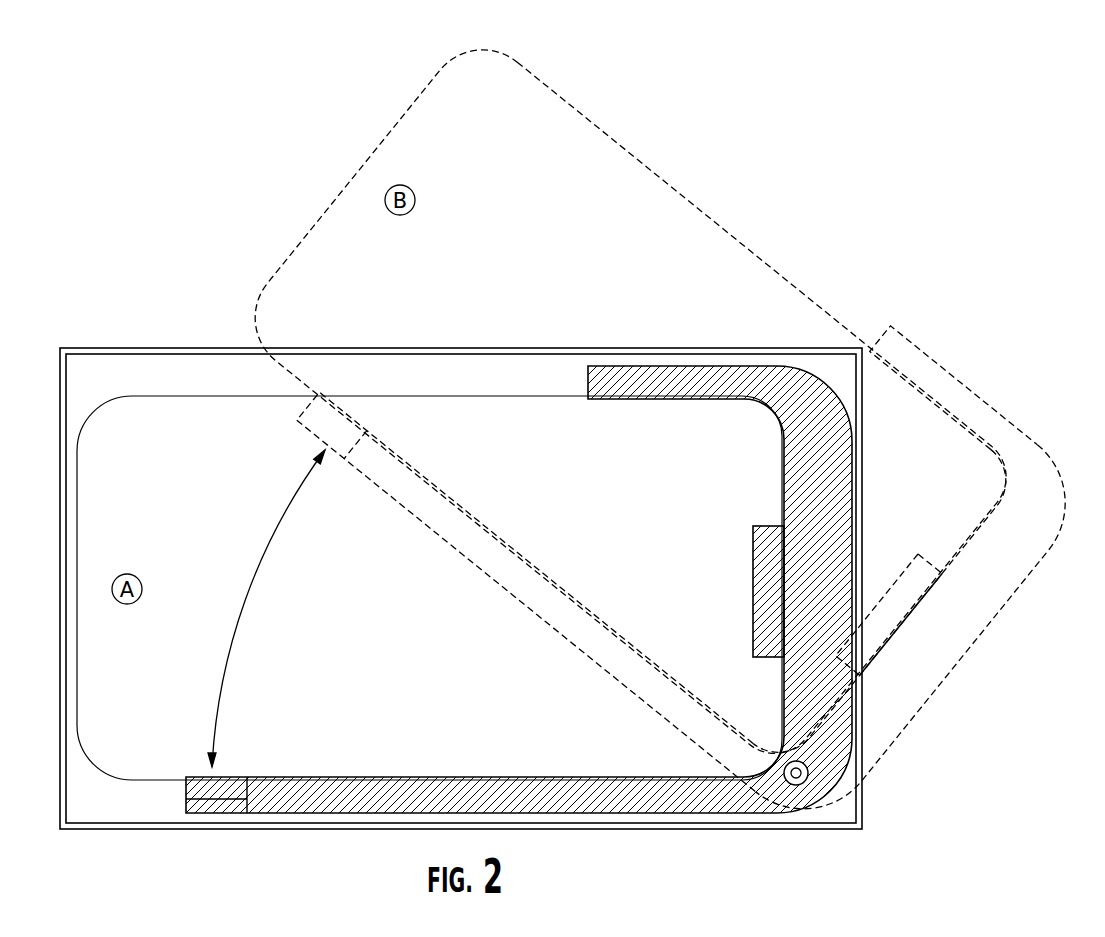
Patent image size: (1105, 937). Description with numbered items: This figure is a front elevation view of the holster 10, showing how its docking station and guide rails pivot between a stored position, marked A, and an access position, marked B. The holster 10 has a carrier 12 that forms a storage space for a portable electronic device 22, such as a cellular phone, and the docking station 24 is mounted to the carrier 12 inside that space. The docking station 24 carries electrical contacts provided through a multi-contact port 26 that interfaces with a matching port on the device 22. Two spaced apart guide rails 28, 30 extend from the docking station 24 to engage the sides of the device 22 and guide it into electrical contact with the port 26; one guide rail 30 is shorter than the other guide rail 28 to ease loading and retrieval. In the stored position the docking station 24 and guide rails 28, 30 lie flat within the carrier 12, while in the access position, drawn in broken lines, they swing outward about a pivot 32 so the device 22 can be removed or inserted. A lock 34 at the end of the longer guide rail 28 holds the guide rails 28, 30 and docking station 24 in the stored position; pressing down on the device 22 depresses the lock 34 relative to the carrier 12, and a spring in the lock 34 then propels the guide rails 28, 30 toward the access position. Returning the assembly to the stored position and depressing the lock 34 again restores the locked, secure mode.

The holster 10 is at (724, 133).
The carrier 12 is at (160, 368).
The portable electronic device 22 is at (585, 110).
The docking station 24 is at (793, 462).
The multi-contact port 26 is at (765, 565).
The guide rail 28 is at (405, 792).
The guide rail 30 is at (650, 392).
The pivot pin 32 is at (798, 786).
The lock 34 is at (220, 802).